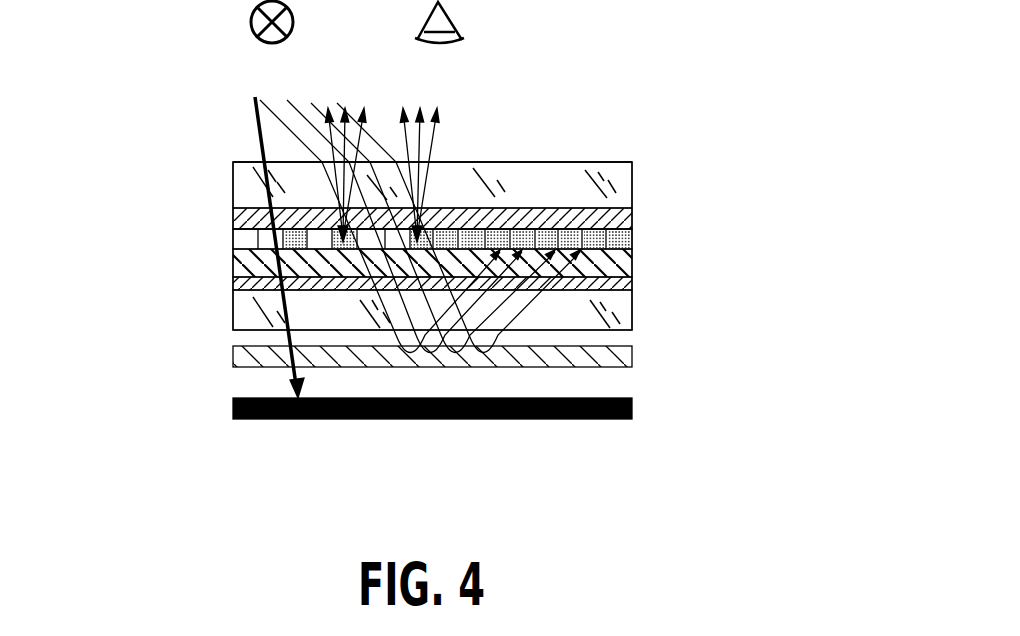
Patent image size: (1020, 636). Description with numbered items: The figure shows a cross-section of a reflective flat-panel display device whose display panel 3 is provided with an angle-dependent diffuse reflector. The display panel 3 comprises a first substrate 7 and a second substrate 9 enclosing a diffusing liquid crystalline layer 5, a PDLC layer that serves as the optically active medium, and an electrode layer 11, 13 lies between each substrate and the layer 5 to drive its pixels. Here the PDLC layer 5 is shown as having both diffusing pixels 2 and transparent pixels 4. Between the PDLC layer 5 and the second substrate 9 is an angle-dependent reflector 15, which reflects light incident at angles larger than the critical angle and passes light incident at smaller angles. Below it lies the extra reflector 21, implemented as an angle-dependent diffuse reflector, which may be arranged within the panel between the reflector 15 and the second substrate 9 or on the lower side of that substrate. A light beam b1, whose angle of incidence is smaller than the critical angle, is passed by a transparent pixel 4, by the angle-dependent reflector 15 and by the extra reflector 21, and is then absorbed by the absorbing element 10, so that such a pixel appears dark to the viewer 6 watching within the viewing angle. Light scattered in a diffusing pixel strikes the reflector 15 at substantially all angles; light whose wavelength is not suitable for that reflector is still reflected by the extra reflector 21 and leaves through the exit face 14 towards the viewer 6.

The diffusing pixels 2 is at (496, 222).
The display panel 3 is at (143, 158).
The transparent pixels 4 is at (233, 231).
The diffusing liquid crystalline layer 5 is at (625, 240).
The viewer 6 is at (456, 19).
The first substrate 7 is at (625, 176).
The second substrate 9 is at (240, 313).
The absorbing element 10 is at (630, 410).
The electrode layer 11 is at (625, 220).
The electrode layer 13 is at (233, 283).
The exit face 14 is at (580, 162).
The angle-dependent reflector 15 is at (233, 258).
The extra reflector 21 is at (625, 353).
The light beam b1 is at (257, 122).